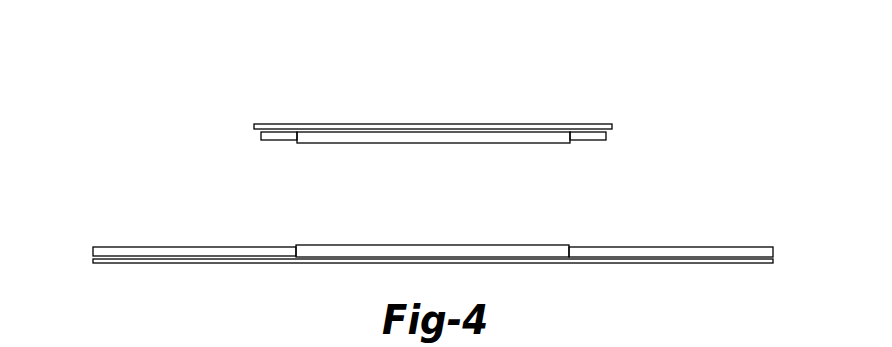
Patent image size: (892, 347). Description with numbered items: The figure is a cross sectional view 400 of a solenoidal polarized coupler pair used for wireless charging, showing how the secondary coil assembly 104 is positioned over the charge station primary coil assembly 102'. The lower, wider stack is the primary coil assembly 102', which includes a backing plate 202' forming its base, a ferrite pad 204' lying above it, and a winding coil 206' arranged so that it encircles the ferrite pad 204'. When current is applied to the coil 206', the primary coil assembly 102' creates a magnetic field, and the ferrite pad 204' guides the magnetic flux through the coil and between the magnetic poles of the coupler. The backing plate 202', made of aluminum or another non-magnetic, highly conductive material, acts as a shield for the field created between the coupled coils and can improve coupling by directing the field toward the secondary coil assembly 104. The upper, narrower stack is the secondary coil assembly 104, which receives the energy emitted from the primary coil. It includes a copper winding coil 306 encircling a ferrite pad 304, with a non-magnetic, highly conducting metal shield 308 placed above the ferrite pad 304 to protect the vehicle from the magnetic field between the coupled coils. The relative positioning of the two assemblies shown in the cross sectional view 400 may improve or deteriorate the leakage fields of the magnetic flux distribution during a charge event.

The cross sectional view 400 is at (106, 82).
The secondary coil assembly 104 is at (284, 97).
The metal shield 308 is at (582, 124).
The copper winding coil 306 is at (411, 137).
The ferrite pad 304 is at (585, 135).
The primary coil assembly 102' is at (451, 256).
The backing plate 202' is at (194, 288).
The winding coil 206' is at (432, 217).
The ferrite pad 204' is at (671, 220).